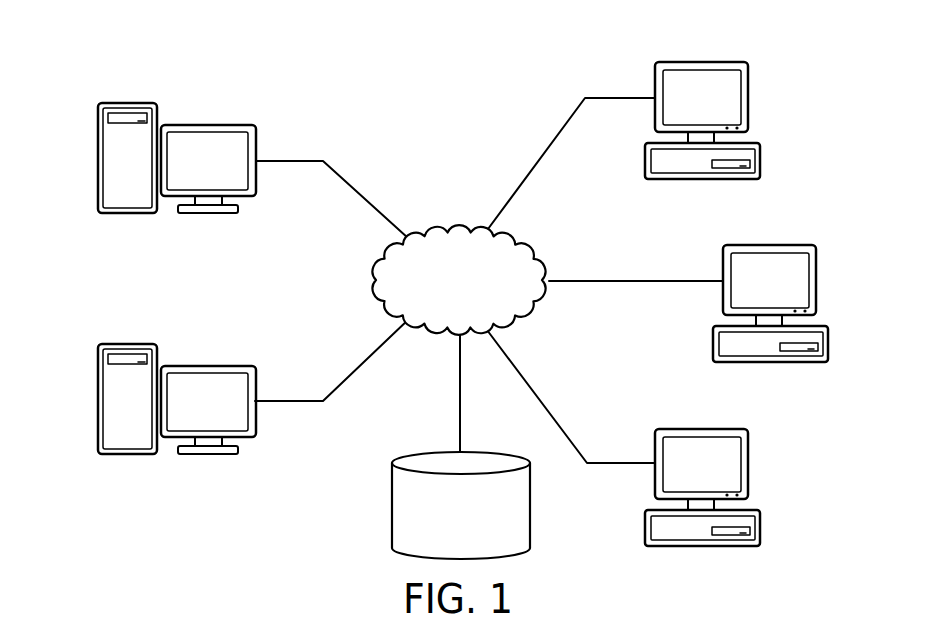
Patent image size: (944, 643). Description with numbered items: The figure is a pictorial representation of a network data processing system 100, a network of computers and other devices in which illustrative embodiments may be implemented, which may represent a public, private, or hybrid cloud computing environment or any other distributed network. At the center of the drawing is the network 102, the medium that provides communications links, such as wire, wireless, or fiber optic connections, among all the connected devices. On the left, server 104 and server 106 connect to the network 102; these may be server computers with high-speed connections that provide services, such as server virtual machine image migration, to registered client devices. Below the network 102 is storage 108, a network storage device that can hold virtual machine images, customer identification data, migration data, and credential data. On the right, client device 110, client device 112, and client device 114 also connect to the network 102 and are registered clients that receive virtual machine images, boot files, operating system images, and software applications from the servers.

The network data processing system 100 is at (331, 73).
The network 102 is at (433, 229).
The server 104 is at (98, 160).
The server 106 is at (98, 398).
The storage 108 is at (391, 503).
The client device 110 is at (762, 160).
The client device 112 is at (830, 345).
The client device 114 is at (762, 528).